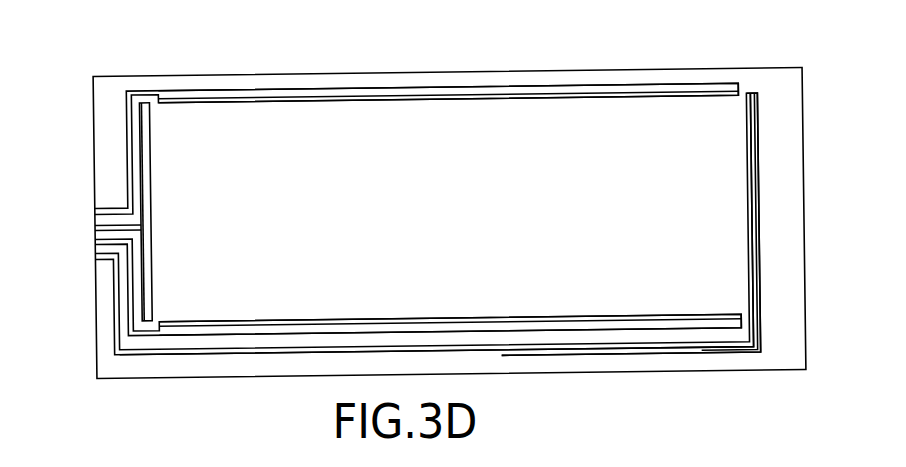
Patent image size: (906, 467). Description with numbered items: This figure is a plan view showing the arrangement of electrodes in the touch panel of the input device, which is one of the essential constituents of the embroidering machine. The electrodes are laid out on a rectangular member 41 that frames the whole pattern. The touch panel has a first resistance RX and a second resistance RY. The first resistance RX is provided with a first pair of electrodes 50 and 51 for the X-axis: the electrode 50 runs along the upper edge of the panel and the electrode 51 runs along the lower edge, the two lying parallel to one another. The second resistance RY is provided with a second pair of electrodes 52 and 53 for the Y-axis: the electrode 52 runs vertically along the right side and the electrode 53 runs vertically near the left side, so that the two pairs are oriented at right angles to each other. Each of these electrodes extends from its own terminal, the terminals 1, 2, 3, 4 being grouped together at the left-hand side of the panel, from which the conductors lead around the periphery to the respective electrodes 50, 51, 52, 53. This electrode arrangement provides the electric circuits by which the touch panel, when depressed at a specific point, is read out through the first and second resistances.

The substrate 41 is at (771, 68).
The terminal 1 is at (93, 208).
The terminal 2 is at (93, 223).
The terminal 3 is at (93, 236).
The terminal 4 is at (93, 250).
The electrode 50 is at (555, 79).
The electrode 51 is at (544, 317).
The electrode 52 is at (745, 224).
The electrode 53 is at (155, 225).